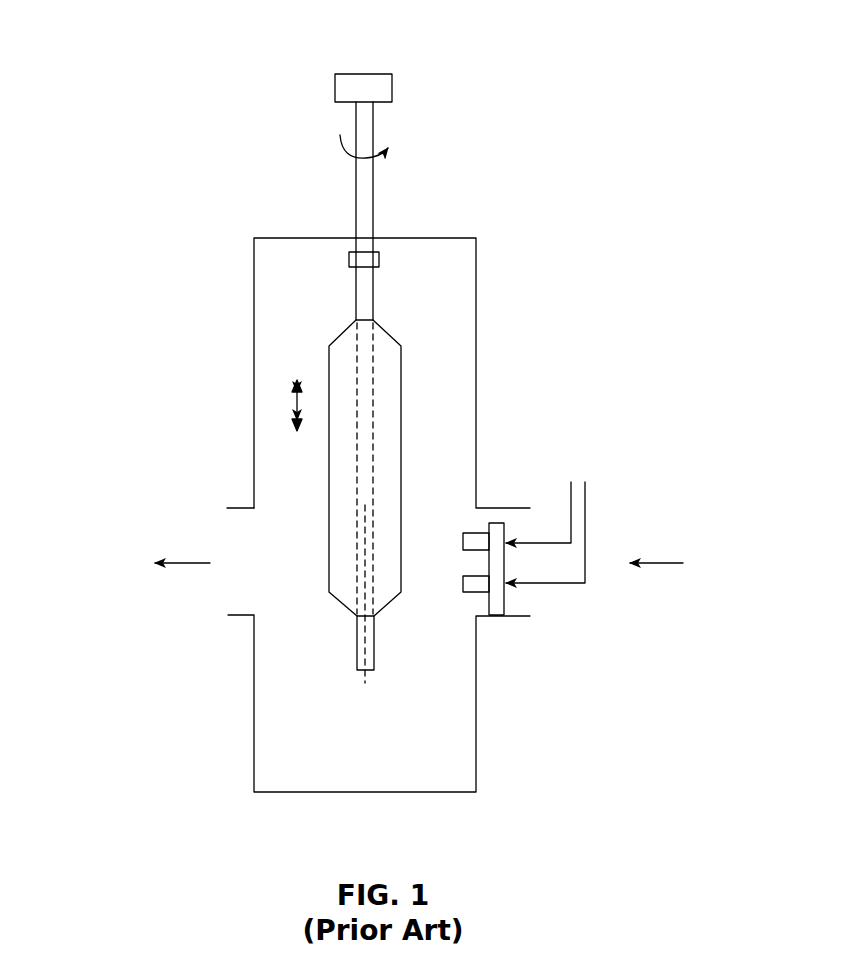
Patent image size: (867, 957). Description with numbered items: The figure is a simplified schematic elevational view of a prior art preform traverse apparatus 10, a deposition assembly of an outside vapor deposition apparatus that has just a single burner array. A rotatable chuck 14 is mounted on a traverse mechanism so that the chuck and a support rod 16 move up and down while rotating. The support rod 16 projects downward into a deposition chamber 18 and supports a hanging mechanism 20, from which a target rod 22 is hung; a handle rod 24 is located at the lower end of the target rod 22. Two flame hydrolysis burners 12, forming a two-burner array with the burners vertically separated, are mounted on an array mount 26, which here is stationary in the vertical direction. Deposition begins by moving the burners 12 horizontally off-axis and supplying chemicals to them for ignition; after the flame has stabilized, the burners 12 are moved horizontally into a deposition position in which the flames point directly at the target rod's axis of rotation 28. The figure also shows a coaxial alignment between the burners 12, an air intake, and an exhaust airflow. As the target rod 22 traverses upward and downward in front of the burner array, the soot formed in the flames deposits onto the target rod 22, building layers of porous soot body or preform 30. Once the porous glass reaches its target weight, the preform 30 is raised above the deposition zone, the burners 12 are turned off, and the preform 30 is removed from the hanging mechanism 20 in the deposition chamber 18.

The preform traverse apparatus 10 is at (222, 38).
The burners 12 is at (477, 592).
The rotatable chuck 14 is at (392, 88).
The support rod 16 is at (373, 207).
The deposition chamber 18 is at (254, 437).
The hanging mechanism 20 is at (349, 260).
The target rod 22 is at (373, 367).
The handle rod 24 is at (356, 645).
The array mount 26 is at (504, 598).
The axis of rotation 28 is at (367, 681).
The porous soot body or preform 30 is at (343, 362).